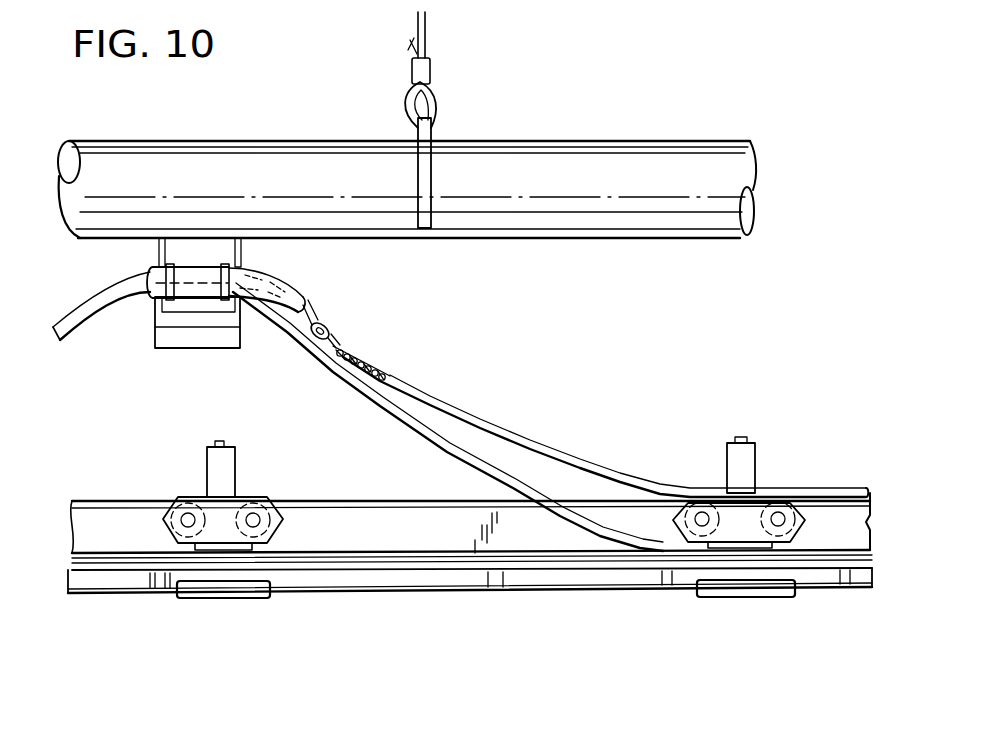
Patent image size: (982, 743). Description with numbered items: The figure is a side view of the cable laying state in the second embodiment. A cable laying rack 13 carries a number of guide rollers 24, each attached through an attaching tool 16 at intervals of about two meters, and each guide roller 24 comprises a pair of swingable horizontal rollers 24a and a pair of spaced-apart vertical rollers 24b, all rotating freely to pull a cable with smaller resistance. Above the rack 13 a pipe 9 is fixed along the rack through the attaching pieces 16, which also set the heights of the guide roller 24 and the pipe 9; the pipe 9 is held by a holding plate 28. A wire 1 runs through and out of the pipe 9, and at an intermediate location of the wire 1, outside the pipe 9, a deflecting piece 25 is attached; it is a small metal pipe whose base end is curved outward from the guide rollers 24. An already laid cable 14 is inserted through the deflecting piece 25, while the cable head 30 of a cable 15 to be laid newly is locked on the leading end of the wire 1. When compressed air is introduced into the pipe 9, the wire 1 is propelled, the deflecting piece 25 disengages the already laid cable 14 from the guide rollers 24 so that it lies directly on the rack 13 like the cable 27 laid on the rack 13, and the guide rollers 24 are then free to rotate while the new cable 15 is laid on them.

The wire 1 is at (150, 255).
The pipe 9 is at (645, 141).
The cable laying rack 13 is at (352, 503).
The already laid cable 14 is at (447, 451).
The cable to be laid newly 15 is at (525, 444).
The attaching tool 16 is at (233, 598).
The guide roller 24 is at (746, 436).
The horizontal rollers 24a is at (702, 516).
The vertical rollers 24b is at (748, 438).
The deflecting piece 25 is at (293, 282).
The cable 27 is at (387, 569).
The holding plate 28 is at (437, 132).
The cable head 30 is at (360, 355).